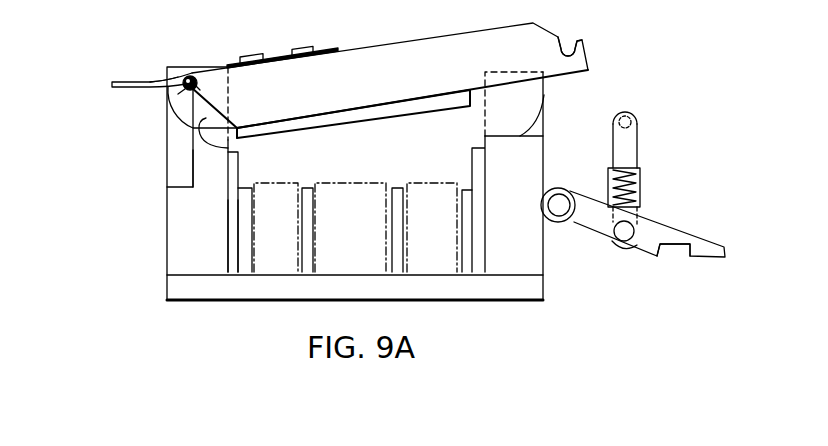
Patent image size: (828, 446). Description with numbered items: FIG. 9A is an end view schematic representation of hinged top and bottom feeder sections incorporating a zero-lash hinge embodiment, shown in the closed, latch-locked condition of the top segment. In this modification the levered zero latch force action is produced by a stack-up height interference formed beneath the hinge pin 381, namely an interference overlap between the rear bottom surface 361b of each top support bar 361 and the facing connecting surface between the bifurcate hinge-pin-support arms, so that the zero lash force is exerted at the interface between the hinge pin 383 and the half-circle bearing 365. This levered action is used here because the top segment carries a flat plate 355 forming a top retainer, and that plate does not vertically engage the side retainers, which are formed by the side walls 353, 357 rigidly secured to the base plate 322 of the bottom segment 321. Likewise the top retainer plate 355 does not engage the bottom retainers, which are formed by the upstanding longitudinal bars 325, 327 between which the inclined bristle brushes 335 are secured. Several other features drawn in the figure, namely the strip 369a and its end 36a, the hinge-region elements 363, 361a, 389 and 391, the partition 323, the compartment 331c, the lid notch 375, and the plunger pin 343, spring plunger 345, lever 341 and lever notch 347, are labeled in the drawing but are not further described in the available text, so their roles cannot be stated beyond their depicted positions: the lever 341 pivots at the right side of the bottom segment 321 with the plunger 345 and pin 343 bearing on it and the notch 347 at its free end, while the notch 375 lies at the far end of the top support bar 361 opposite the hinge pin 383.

The strip end 36a is at (168, 46).
The flexible strip 369a is at (128, 82).
The hinge link 363 is at (178, 94).
The lid guide arc 361a is at (177, 132).
The left housing wall 389 is at (167, 147).
The left housing recess 391 is at (193, 162).
The partition wall 323 is at (244, 209).
The side wall 353 is at (234, 251).
The hinge pin 383 is at (192, 76).
The hinge pin 381 is at (227, 60).
The half-circle bearing 365 is at (198, 86).
The rear bottom surface 361b is at (228, 152).
The top support bar 361 is at (389, 50).
The flat plate 355 is at (368, 112).
The upstanding longitudinal bar 325 is at (306, 187).
The upstanding longitudinal bar 327 is at (467, 190).
The inclined bristle brush 335 is at (297, 237).
The side wall 357 is at (465, 243).
The housing compartment 331c is at (545, 97).
The lid notch 375 is at (582, 53).
The bottom segment 321 is at (543, 284).
The base plate 322 is at (470, 298).
The plunger pin 343 is at (627, 114).
The spring plunger 345 is at (624, 163).
The lever 341 is at (656, 214).
The lever catch notch 347 is at (688, 250).